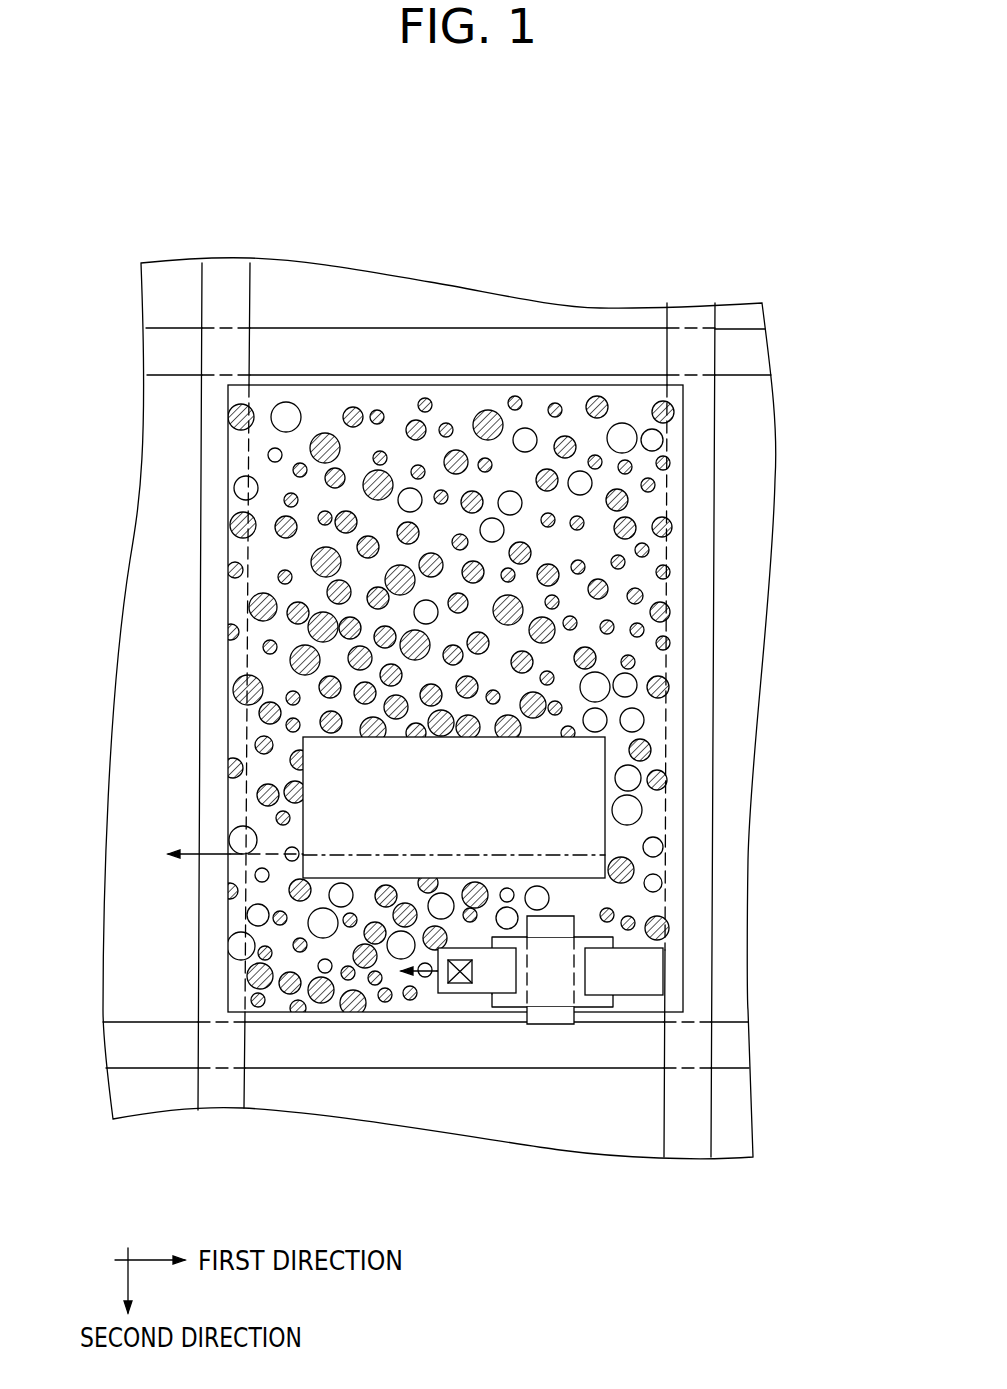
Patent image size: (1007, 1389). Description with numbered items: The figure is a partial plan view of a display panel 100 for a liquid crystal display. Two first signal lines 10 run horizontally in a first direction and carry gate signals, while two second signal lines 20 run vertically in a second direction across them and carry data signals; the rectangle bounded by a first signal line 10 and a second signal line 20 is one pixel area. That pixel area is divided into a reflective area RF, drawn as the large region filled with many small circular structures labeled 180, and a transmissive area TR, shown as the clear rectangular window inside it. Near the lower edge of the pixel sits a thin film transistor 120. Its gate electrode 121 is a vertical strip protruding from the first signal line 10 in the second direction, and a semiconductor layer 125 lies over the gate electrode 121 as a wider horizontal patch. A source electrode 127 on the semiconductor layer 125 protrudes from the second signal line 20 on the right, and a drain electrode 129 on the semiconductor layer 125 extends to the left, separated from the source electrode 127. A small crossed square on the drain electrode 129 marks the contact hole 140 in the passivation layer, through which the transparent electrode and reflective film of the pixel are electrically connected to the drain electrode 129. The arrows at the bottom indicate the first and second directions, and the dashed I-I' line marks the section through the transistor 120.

The display panel 100 is at (487, 130).
The first signal line 10 is at (750, 358).
The second signal line 20 is at (693, 880).
The reflective area RF is at (650, 496).
The scattering particle 180 is at (652, 440).
The transmissive area TR is at (590, 828).
The thin film transistor 120 is at (549, 1032).
The gate electrode 121 is at (542, 983).
The semiconductor layer 125 is at (582, 985).
The source electrode 127 is at (624, 1029).
The drain electrode 129 is at (505, 980).
The contact hole 140 is at (458, 987).